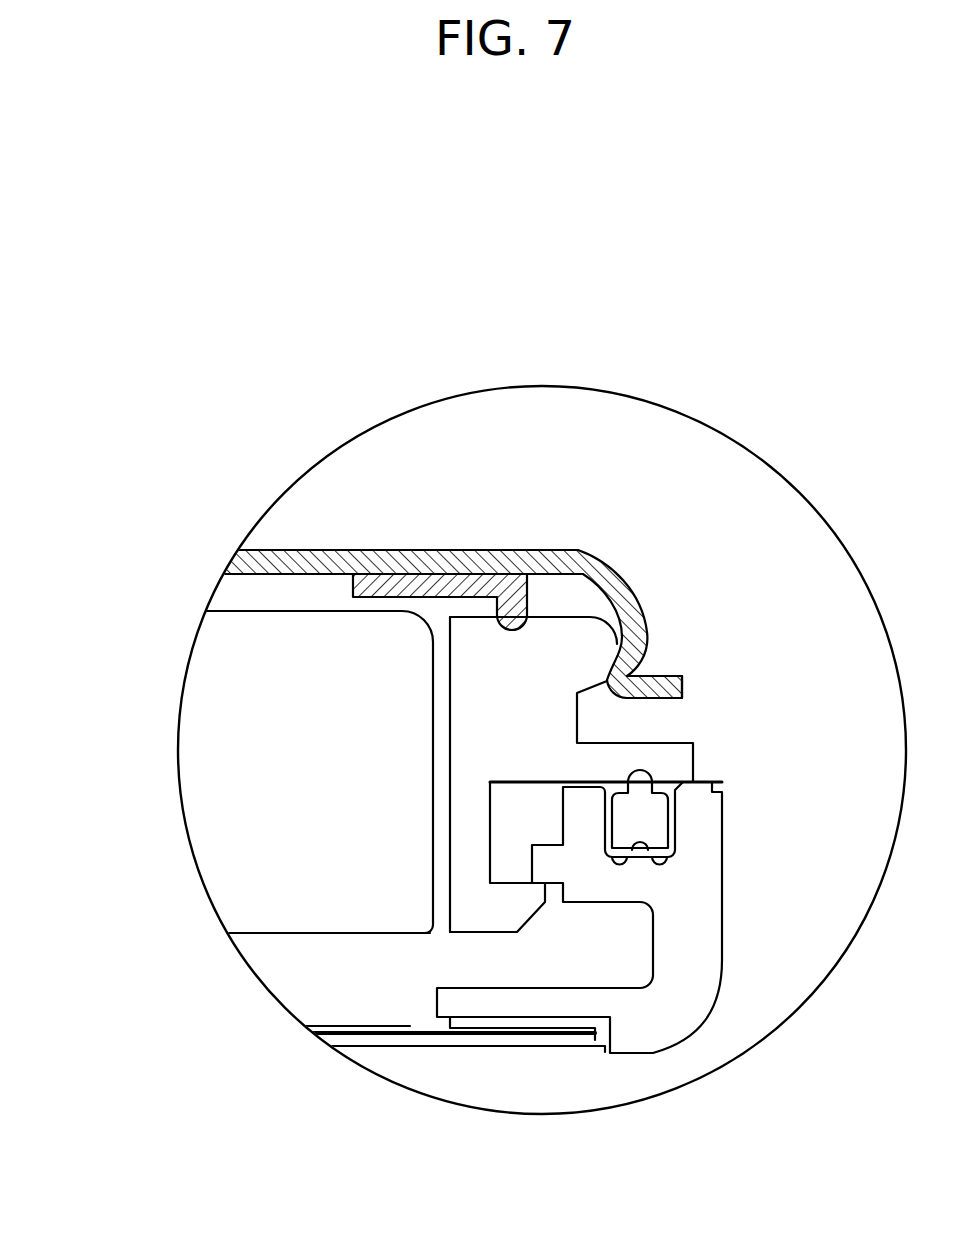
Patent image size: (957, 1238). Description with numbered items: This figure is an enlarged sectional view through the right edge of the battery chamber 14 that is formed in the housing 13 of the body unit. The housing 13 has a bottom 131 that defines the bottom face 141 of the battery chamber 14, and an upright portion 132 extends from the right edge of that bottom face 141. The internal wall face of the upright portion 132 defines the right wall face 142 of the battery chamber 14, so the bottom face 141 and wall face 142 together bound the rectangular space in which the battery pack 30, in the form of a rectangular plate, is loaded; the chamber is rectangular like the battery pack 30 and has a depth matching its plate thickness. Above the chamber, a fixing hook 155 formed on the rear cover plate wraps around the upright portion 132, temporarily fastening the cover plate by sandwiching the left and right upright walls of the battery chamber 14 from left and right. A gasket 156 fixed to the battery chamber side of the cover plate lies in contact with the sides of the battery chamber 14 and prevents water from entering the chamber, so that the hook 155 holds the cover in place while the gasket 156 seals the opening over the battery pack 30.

The housing 13 is at (745, 815).
The battery chamber 14 is at (236, 600).
The battery pack 30 is at (212, 690).
The bottom 131 is at (278, 967).
The upright portion 132 is at (557, 662).
The bottom face 141 is at (270, 933).
The wall face 142 is at (433, 720).
The fixing hook 155 is at (645, 615).
The gasket 156 is at (490, 578).